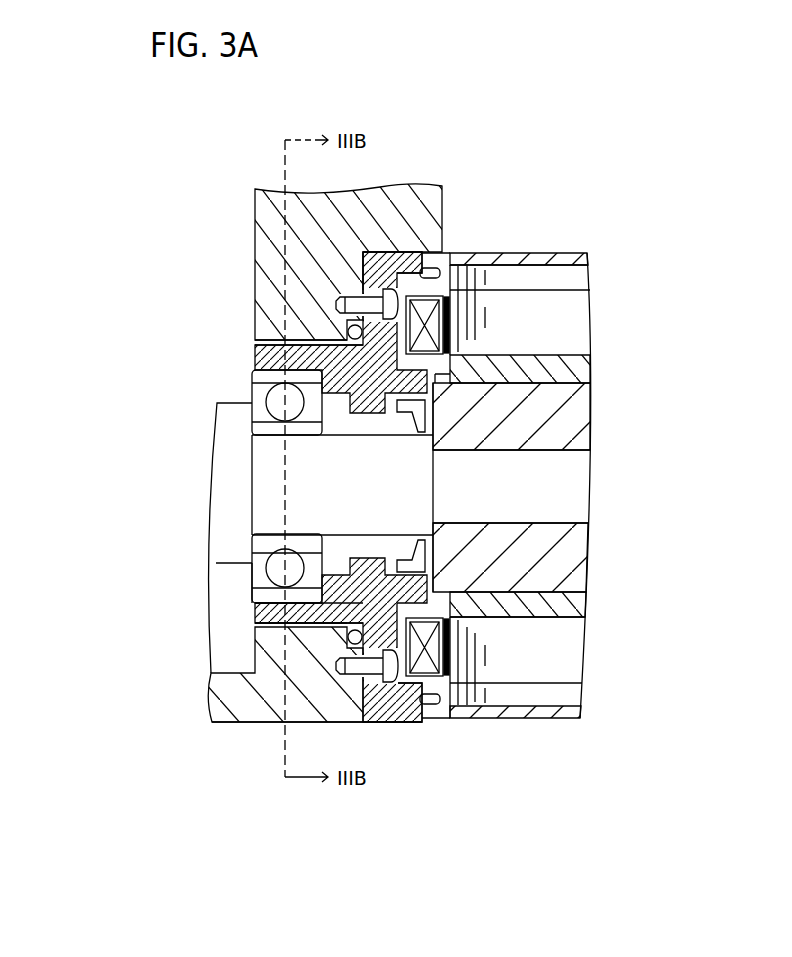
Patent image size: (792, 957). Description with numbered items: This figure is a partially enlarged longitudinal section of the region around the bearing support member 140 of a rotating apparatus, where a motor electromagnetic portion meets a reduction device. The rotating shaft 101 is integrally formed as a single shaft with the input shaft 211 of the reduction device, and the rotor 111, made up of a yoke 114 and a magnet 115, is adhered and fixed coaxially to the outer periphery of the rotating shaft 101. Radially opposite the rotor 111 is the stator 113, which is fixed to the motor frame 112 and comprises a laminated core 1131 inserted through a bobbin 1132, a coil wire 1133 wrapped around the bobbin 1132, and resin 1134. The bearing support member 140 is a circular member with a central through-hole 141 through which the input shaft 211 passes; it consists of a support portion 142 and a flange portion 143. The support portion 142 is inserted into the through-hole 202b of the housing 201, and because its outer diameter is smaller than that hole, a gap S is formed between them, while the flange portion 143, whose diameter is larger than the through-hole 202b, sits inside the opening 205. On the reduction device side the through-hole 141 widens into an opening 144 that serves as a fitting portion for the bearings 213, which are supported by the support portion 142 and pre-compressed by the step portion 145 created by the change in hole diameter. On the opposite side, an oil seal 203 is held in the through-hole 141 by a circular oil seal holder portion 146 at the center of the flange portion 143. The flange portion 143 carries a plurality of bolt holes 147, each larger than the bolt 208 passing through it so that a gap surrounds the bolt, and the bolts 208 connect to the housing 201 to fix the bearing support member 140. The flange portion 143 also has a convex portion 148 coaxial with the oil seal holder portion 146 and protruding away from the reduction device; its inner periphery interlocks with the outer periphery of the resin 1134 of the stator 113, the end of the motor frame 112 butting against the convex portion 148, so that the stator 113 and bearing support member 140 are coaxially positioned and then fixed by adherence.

The rotating shaft 101 is at (550, 485).
The rotor 111 is at (685, 553).
The motor frame 112 is at (513, 720).
The stator 113 is at (694, 272).
The yoke 114 is at (547, 553).
The magnet 115 is at (547, 603).
The laminated core 1131 is at (553, 348).
The bobbin 1132 is at (445, 332).
The coil wire 1133 is at (429, 303).
The resin 1134 is at (437, 283).
The bearing support member 140 is at (430, 833).
The through-hole 141 is at (290, 433).
The support portion 142 is at (262, 722).
The flange portion 143 is at (390, 726).
The opening 144 is at (255, 600).
The step portion 145 is at (305, 403).
The oil seal holder portion 146 is at (445, 388).
The bolt hole 147 is at (362, 283).
The convex portion 148 is at (414, 253).
The housing 201 is at (250, 217).
The through-hole 202b is at (253, 623).
The oil seal 203 is at (403, 433).
The opening 205 is at (432, 266).
The bolt 208 is at (334, 303).
The input shaft 211 is at (263, 487).
The bearings 213 is at (252, 580).
The gap S is at (268, 343).